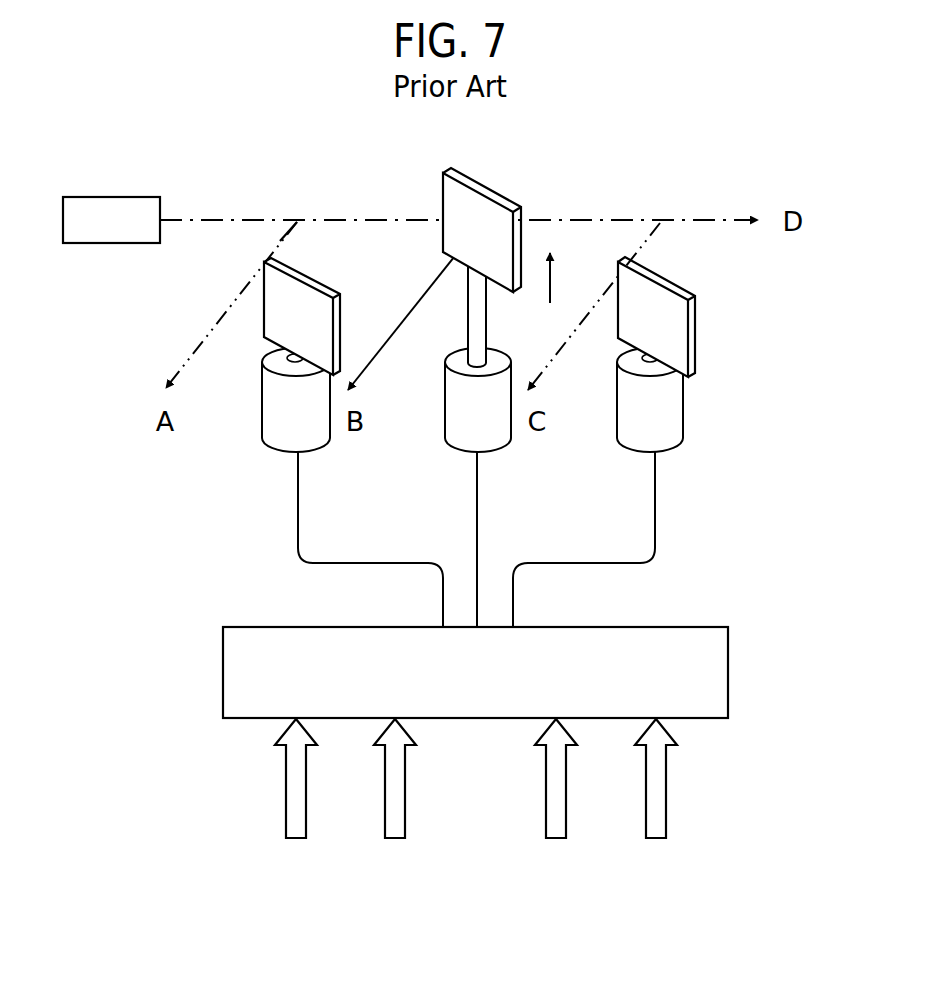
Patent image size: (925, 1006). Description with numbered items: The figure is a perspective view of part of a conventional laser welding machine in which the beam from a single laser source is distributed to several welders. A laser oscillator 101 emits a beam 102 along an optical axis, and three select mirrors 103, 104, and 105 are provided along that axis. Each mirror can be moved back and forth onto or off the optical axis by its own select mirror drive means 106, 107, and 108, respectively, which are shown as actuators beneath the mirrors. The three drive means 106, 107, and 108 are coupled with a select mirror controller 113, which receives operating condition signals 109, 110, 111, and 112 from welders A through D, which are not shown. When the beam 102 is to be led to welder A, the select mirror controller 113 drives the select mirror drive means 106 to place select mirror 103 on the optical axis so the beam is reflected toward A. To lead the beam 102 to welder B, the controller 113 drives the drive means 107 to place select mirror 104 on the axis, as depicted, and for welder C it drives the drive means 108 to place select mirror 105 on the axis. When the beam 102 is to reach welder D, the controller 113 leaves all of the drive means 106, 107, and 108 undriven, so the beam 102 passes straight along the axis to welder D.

The laser oscillator 101 is at (139, 197).
The beam 102 is at (277, 219).
The select mirror 103 is at (322, 287).
The select mirror 104 is at (495, 195).
The select mirror 105 is at (678, 287).
The select mirror drive means 106 is at (268, 425).
The select mirror drive means 107 is at (448, 425).
The select mirror drive means 108 is at (622, 425).
The operating condition signal 109 is at (285, 812).
The operating condition signal 110 is at (384, 812).
The operating condition signal 111 is at (545, 811).
The operating condition signal 112 is at (645, 811).
The select mirror controller 113 is at (273, 627).